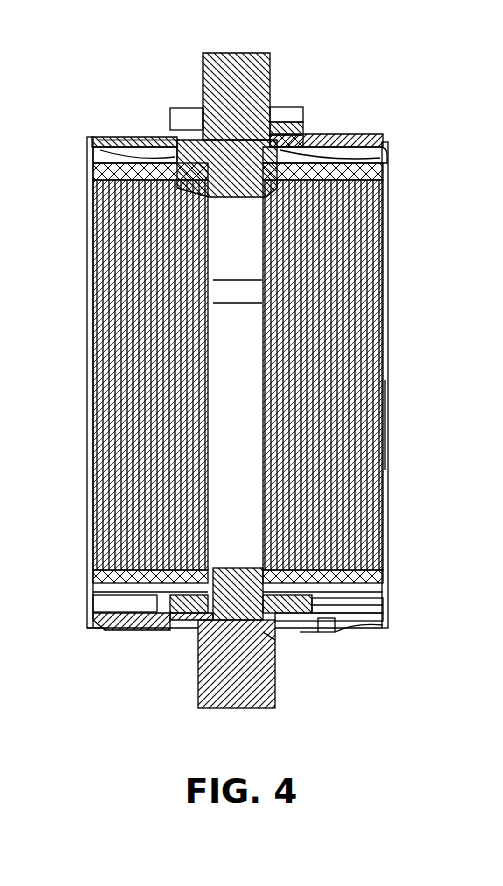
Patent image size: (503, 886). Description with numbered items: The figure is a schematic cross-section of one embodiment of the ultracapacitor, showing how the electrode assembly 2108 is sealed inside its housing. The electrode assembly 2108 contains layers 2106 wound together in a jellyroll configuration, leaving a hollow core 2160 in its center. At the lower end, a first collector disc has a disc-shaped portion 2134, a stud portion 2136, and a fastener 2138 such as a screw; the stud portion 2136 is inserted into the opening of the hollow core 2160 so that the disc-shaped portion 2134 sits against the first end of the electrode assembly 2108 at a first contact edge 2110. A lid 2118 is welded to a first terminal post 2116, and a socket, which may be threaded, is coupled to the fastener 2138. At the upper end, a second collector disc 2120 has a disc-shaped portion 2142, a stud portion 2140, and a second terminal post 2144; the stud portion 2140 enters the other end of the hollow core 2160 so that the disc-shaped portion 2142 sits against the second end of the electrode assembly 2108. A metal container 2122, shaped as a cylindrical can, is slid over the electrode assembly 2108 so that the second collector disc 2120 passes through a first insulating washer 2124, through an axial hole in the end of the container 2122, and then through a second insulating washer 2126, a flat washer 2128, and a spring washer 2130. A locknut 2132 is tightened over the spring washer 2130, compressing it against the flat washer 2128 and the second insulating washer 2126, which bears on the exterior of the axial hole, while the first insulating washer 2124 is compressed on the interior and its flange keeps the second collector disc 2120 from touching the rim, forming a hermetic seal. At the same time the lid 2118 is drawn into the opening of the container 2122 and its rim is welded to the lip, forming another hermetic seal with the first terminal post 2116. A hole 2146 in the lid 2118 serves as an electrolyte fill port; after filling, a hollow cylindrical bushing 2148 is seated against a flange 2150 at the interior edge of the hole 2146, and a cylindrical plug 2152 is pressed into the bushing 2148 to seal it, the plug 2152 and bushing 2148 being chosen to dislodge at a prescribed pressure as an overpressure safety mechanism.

The layers 2106 is at (372, 212).
The electrode assembly 2108 is at (360, 255).
The first contact edge 2110 is at (92, 572).
The first terminal post 2116 is at (197, 672).
The lid 2118 is at (113, 632).
The second collector disc 2120 is at (186, 50).
The metal container 2122 is at (386, 420).
The first insulating washer 2124 is at (315, 150).
The second insulating washer 2126 is at (367, 142).
The flat washer 2128 is at (300, 138).
The spring washer 2130 is at (300, 123).
The locknut 2132 is at (300, 113).
The disc-shaped portion 2134 is at (340, 595).
The stud portion 2136 is at (243, 568).
The fastener 2138 is at (272, 640).
The stud portion 2140 is at (231, 198).
The disc-shaped portion 2142 is at (92, 148).
The second terminal post 2144 is at (268, 63).
The hole 2146 is at (331, 638).
The bushing 2148 is at (340, 625).
The flange 2150 is at (378, 610).
The plug 2152 is at (345, 636).
The hollow core 2160 is at (239, 292).